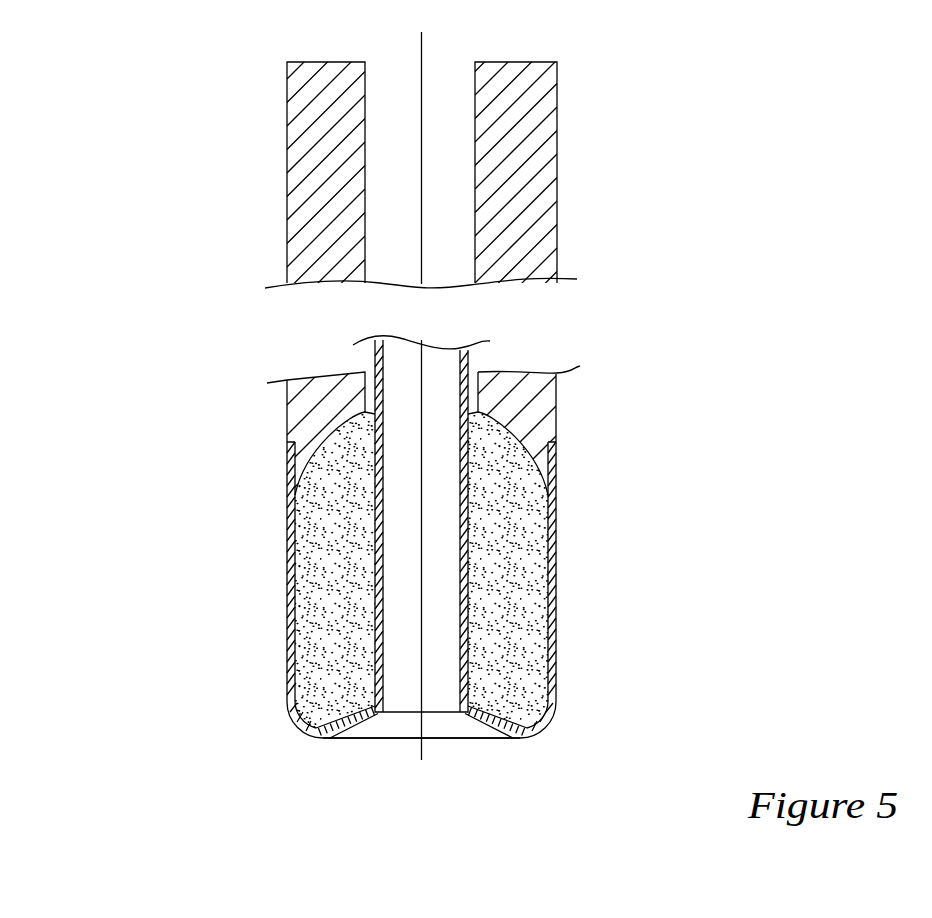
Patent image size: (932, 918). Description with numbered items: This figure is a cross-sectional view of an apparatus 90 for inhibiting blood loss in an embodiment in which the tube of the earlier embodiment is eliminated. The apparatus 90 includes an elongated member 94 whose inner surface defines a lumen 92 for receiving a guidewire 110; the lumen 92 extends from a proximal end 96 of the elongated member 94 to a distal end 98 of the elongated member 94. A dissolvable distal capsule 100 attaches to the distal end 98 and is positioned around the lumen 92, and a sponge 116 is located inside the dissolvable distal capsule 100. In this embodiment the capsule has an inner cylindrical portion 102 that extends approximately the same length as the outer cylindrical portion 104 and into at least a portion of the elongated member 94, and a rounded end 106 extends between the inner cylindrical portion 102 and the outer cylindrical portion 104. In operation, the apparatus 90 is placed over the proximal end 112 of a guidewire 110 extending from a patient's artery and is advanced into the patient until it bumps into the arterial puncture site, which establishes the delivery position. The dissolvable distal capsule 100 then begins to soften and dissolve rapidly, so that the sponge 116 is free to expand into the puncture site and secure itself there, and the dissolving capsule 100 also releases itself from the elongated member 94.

The apparatus 90 is at (183, 152).
The lumen 92 is at (475, 252).
The elongated member 94 is at (533, 399).
The proximal end 96 is at (557, 62).
The distal end 98 is at (547, 479).
The dissolvable distal capsule 100 is at (280, 546).
The inner cylindrical portion 102 is at (379, 697).
The outer cylindrical portion 104 is at (537, 612).
The rounded end 106 is at (524, 735).
The guidewire 110 is at (423, 752).
The proximal end of guidewire 112 is at (419, 740).
The sponge 116 is at (530, 540).